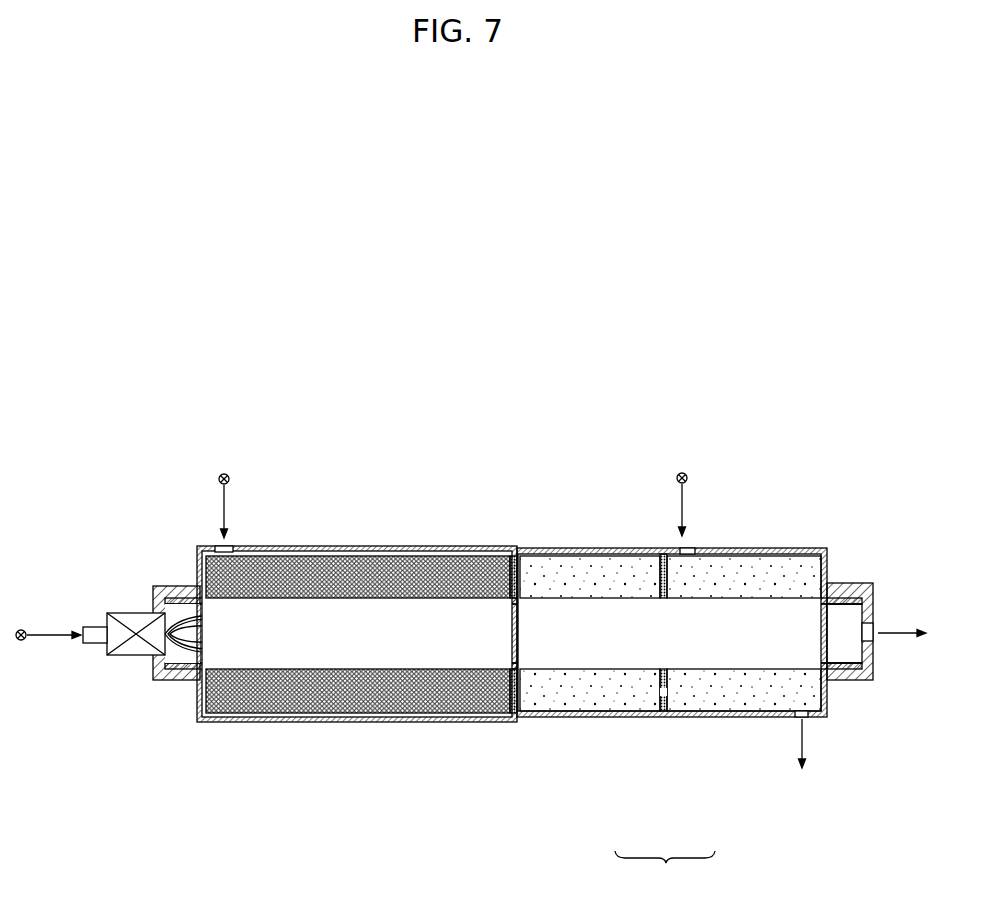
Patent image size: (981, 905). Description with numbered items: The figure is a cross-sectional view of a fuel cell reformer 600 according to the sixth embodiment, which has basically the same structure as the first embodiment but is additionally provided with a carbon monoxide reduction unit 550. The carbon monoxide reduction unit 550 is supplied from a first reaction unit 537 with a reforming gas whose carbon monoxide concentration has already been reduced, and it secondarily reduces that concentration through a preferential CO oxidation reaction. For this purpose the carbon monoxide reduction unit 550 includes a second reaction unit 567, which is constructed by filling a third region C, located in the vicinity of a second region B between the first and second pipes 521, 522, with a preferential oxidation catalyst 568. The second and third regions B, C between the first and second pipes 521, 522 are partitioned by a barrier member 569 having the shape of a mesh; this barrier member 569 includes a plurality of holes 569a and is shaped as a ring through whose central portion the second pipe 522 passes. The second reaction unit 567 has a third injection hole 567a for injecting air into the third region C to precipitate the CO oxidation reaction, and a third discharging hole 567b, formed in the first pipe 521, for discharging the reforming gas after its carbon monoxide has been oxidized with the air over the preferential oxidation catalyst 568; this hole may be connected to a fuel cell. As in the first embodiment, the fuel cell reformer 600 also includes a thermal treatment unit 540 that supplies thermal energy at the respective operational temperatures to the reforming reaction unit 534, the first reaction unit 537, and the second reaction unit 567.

The fuel cell reformer 600 is at (467, 502).
The thermal treatment unit 540 is at (178, 727).
The reforming reaction unit 534 is at (350, 740).
The first pipe 521 is at (550, 548).
The second pipe 522 is at (788, 590).
The first reaction unit 537 is at (590, 729).
The second reaction unit 567 is at (737, 729).
The preferential oxidation catalyst 568 is at (763, 705).
The barrier member 569 is at (655, 690).
The holes 569a is at (670, 695).
The third injection hole 567a is at (692, 557).
The third discharging hole 567b is at (808, 722).
The carbon monoxide reduction unit 550 is at (665, 870).
The second region B is at (616, 580).
The third region C is at (746, 563).